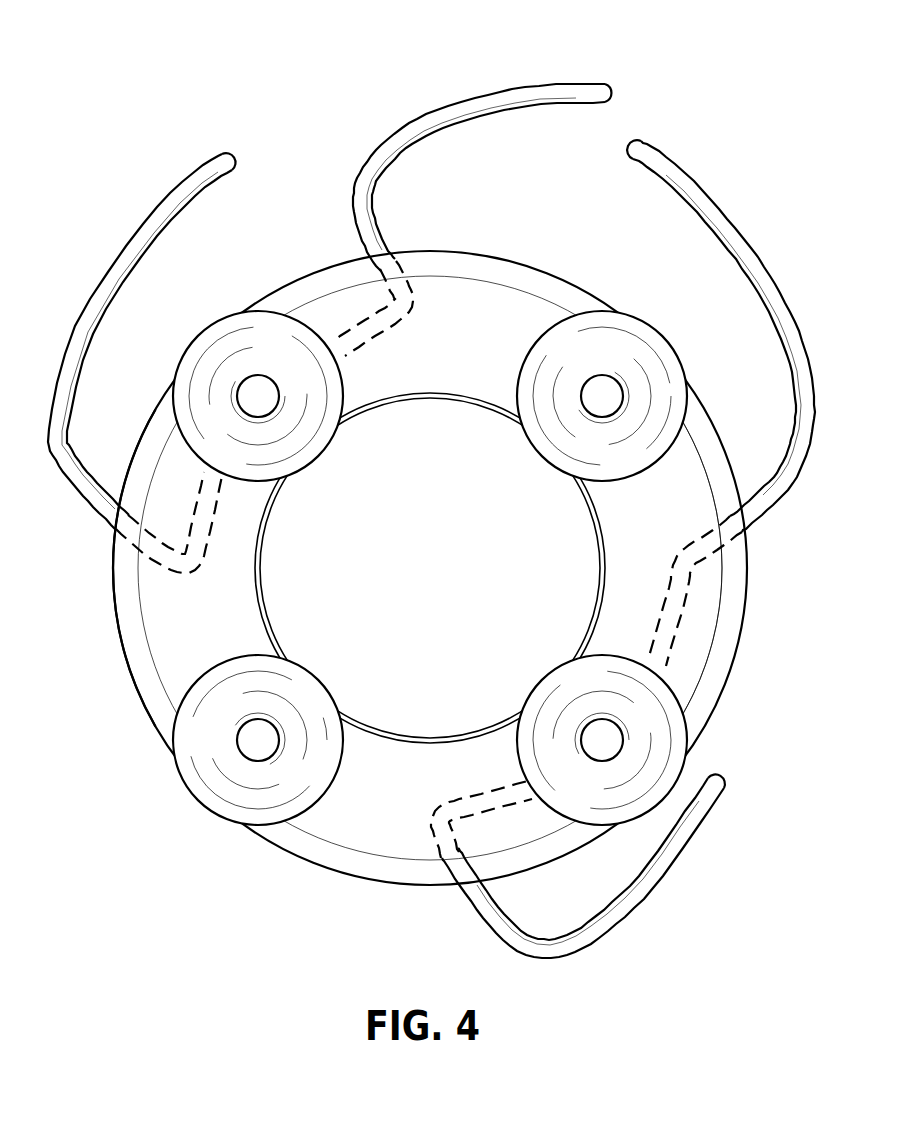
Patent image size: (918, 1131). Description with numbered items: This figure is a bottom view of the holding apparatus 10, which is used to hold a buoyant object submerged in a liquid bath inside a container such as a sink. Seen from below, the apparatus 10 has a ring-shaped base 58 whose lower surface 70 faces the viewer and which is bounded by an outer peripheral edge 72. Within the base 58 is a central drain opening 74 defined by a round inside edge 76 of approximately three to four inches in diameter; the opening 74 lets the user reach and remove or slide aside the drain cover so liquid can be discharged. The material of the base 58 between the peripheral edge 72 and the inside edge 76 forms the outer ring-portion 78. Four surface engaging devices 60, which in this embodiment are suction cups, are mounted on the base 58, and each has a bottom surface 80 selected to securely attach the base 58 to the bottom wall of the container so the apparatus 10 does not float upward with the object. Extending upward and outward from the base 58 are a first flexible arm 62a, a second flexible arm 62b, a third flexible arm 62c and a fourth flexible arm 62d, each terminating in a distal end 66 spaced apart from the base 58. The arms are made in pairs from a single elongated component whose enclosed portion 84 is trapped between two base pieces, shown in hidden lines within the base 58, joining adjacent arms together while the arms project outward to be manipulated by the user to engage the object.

The holding apparatus 10 is at (430, 505).
The base 58 is at (332, 833).
The surface engaging devices 60 is at (198, 760).
The first flexible arm 62a is at (153, 233).
The second flexible arm 62b is at (414, 117).
The third flexible arm 62c is at (733, 412).
The fourth flexible arm 62d is at (683, 853).
The distal end 66 is at (217, 147).
The lower surface 70 is at (492, 312).
The outer peripheral edge 72 is at (107, 577).
The drain opening 74 is at (307, 585).
The inside edge 76 is at (595, 568).
The outer ring-portion 78 is at (693, 476).
The bottom surface 80 is at (203, 377).
The enclosed portion 84 is at (668, 625).